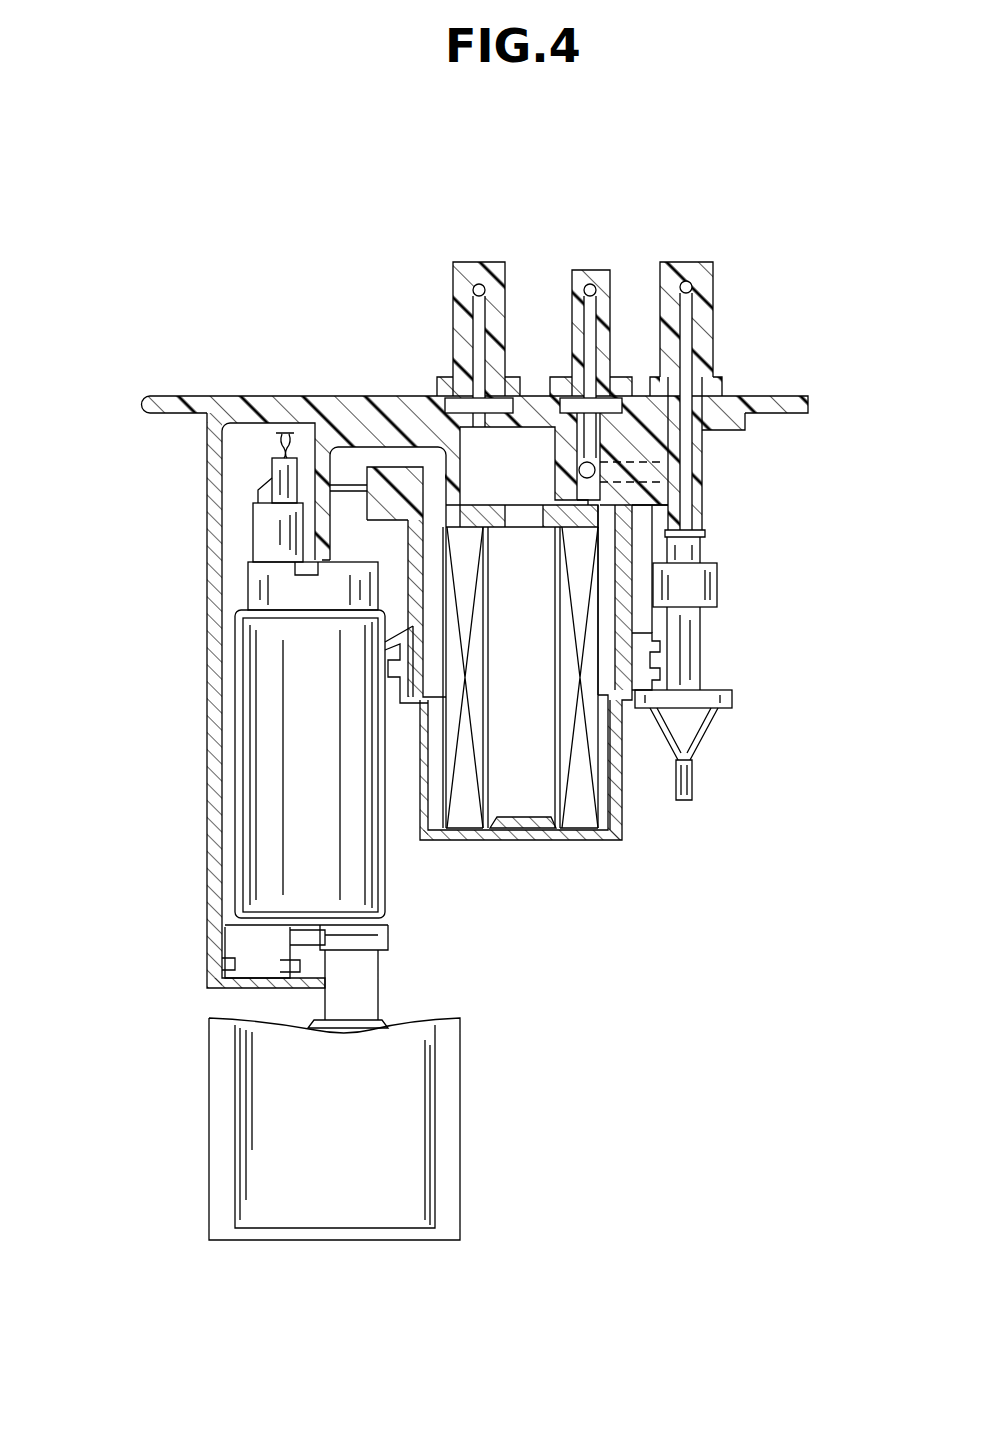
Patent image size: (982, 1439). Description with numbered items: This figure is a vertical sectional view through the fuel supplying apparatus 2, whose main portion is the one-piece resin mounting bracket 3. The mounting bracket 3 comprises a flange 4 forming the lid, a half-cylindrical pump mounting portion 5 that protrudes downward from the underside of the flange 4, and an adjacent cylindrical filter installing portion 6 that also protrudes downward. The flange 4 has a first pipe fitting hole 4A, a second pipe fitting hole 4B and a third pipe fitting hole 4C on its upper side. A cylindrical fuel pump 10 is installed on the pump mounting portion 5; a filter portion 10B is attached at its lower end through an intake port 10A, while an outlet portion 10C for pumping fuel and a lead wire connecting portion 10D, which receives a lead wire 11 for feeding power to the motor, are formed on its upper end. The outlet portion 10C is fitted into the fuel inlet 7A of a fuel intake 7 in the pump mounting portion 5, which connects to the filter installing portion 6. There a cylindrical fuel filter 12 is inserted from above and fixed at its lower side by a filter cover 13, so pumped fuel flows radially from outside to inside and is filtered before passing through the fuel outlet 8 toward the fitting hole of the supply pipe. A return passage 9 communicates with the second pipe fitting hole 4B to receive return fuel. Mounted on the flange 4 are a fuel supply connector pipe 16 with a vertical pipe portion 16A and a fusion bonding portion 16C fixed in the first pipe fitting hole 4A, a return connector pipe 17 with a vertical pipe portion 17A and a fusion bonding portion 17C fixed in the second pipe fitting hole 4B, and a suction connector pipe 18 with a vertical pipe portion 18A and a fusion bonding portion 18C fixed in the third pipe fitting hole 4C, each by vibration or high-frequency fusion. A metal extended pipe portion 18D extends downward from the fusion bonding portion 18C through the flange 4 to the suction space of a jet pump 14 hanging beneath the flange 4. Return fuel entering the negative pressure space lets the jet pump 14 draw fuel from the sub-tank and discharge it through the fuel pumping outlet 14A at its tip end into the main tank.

The fuel supplying apparatus 2 is at (605, 324).
The mounting bracket 3 is at (250, 388).
The flange 4 is at (172, 394).
The first pipe fitting hole 4A is at (440, 380).
The second pipe fitting hole 4B is at (610, 380).
The third pipe fitting hole 4C is at (745, 425).
The pump mounting portion 5 is at (210, 678).
The filter installing portion 6 is at (702, 625).
The fuel intake 7 is at (320, 508).
The fuel inlet 7A is at (343, 464).
The fuel outlet 8 is at (530, 450).
The return passage 9 is at (596, 458).
The fuel pump 10 is at (250, 746).
The intake port 10A is at (372, 978).
The filter portion 10B is at (447, 1055).
The outlet portion 10C is at (340, 565).
The lead wire connecting portion 10D is at (270, 542).
The lead wire 11 is at (278, 440).
The fuel filter 12 is at (466, 808).
The filter cover 13 is at (622, 805).
The jet pump 14 is at (705, 752).
The fuel pumping outlet 14A is at (692, 785).
The fuel supply connector pipe 16 is at (427, 290).
The vertical pipe portion 16A is at (487, 262).
The fusion bonding portion 16C is at (445, 378).
The return connector pipe 17 is at (585, 309).
The vertical pipe portion 17A is at (600, 270).
The fusion bonding portion 17C is at (556, 378).
The suction connector pipe 18 is at (763, 355).
The vertical pipe portion 18A is at (715, 347).
The fusion bonding portion 18C is at (725, 385).
The extended pipe portion 18D is at (702, 508).